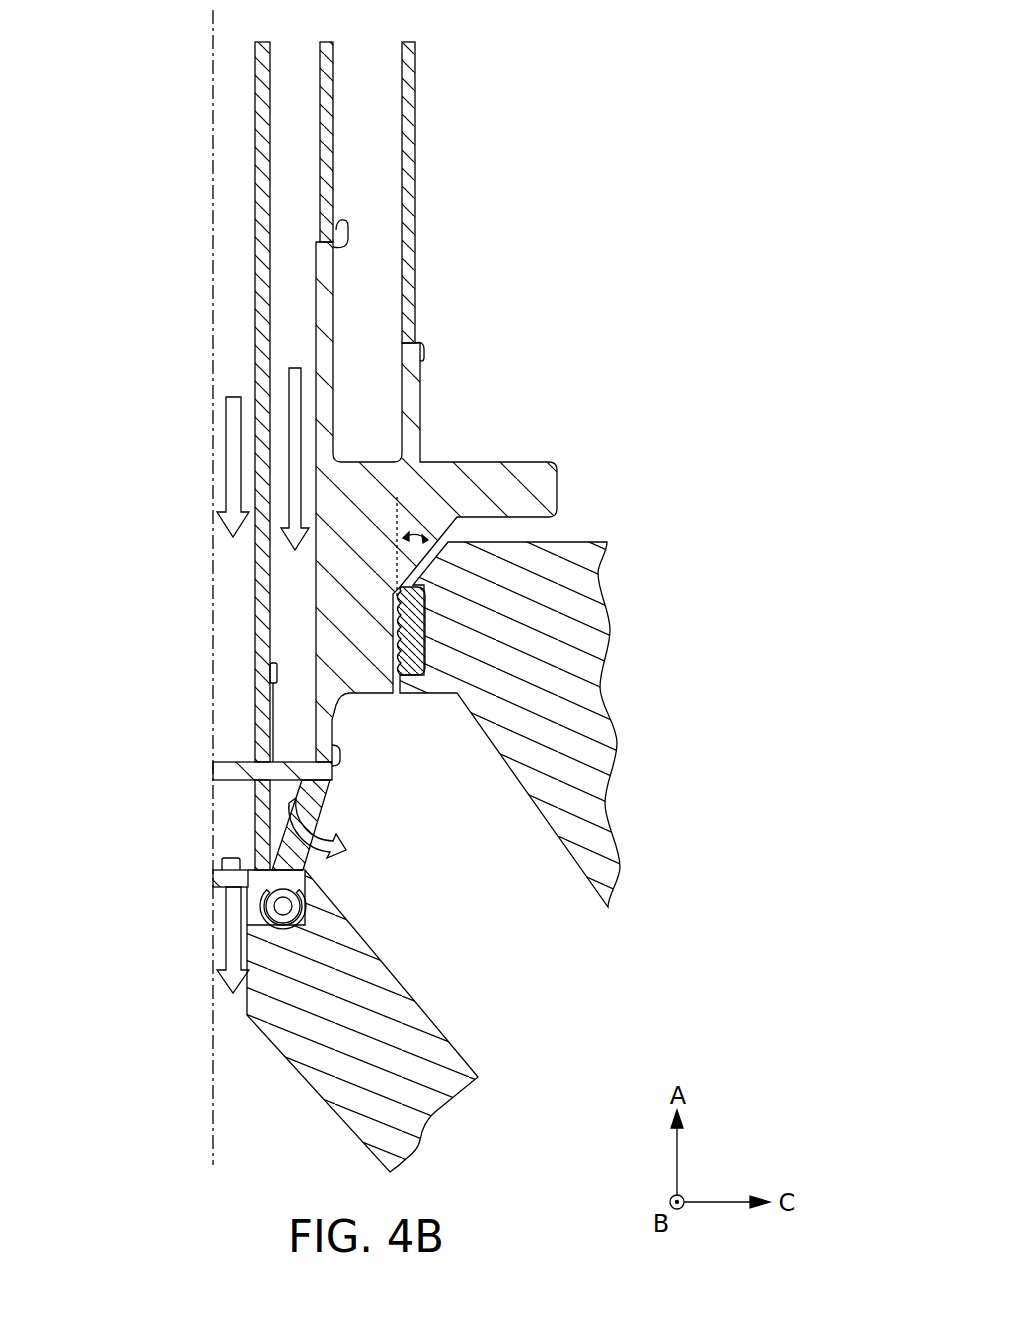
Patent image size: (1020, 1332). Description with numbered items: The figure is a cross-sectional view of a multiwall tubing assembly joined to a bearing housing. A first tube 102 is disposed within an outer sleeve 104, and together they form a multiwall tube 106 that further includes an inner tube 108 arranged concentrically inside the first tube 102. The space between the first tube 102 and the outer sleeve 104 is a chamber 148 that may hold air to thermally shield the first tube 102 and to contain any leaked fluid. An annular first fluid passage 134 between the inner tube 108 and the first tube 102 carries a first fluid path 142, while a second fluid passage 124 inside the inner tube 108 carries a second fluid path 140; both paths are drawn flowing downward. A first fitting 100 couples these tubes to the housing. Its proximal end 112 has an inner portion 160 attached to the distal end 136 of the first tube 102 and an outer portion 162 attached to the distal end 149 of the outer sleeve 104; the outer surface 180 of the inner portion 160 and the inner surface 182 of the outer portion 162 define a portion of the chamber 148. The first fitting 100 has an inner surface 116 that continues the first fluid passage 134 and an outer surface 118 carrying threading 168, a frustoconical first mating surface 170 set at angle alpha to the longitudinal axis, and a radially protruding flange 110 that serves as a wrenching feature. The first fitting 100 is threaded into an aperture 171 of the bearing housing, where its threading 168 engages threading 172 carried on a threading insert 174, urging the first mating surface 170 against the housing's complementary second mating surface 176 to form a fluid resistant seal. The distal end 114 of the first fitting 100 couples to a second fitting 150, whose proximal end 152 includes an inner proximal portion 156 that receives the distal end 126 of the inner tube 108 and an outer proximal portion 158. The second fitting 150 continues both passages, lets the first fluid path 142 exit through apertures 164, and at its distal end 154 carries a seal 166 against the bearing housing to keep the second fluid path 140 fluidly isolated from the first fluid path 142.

The first fitting 100 is at (423, 470).
The first tube 102 is at (333, 136).
The outer sleeve 104 is at (406, 93).
The multiwall tube 106 is at (482, 75).
The inner tube 108 is at (255, 176).
The flange 110 is at (532, 481).
The proximal end 112 is at (503, 222).
The distal end 114 is at (340, 769).
The inner surface 116 is at (316, 601).
The outer surface 118 is at (420, 417).
The second fluid passage 124 is at (255, 286).
The distal end 126 is at (268, 686).
The first fluid passage 134 is at (284, 229).
The distal end 136 is at (338, 249).
The second fluid path 140 is at (226, 397).
The first fluid path 142 is at (295, 368).
The chamber 148 is at (370, 56).
The distal end 149 is at (421, 358).
The second fitting 150 is at (235, 771).
The proximal end 152 is at (137, 635).
The distal end 154 is at (262, 928).
The inner proximal portion 156 is at (270, 681).
The outer proximal portion 158 is at (318, 756).
The inner portion 160 is at (348, 231).
The outer portion 162 is at (421, 346).
The apertures 164 is at (300, 798).
The seal 166 is at (300, 919).
The threading 168 is at (416, 627).
The first mating surface 170 is at (438, 534).
The aperture 171 is at (387, 700).
The threading 172 is at (397, 663).
The threading insert 174 is at (425, 661).
The second mating surface 176 is at (400, 582).
The outer surface 180 is at (333, 351).
The inner surface 182 is at (403, 406).